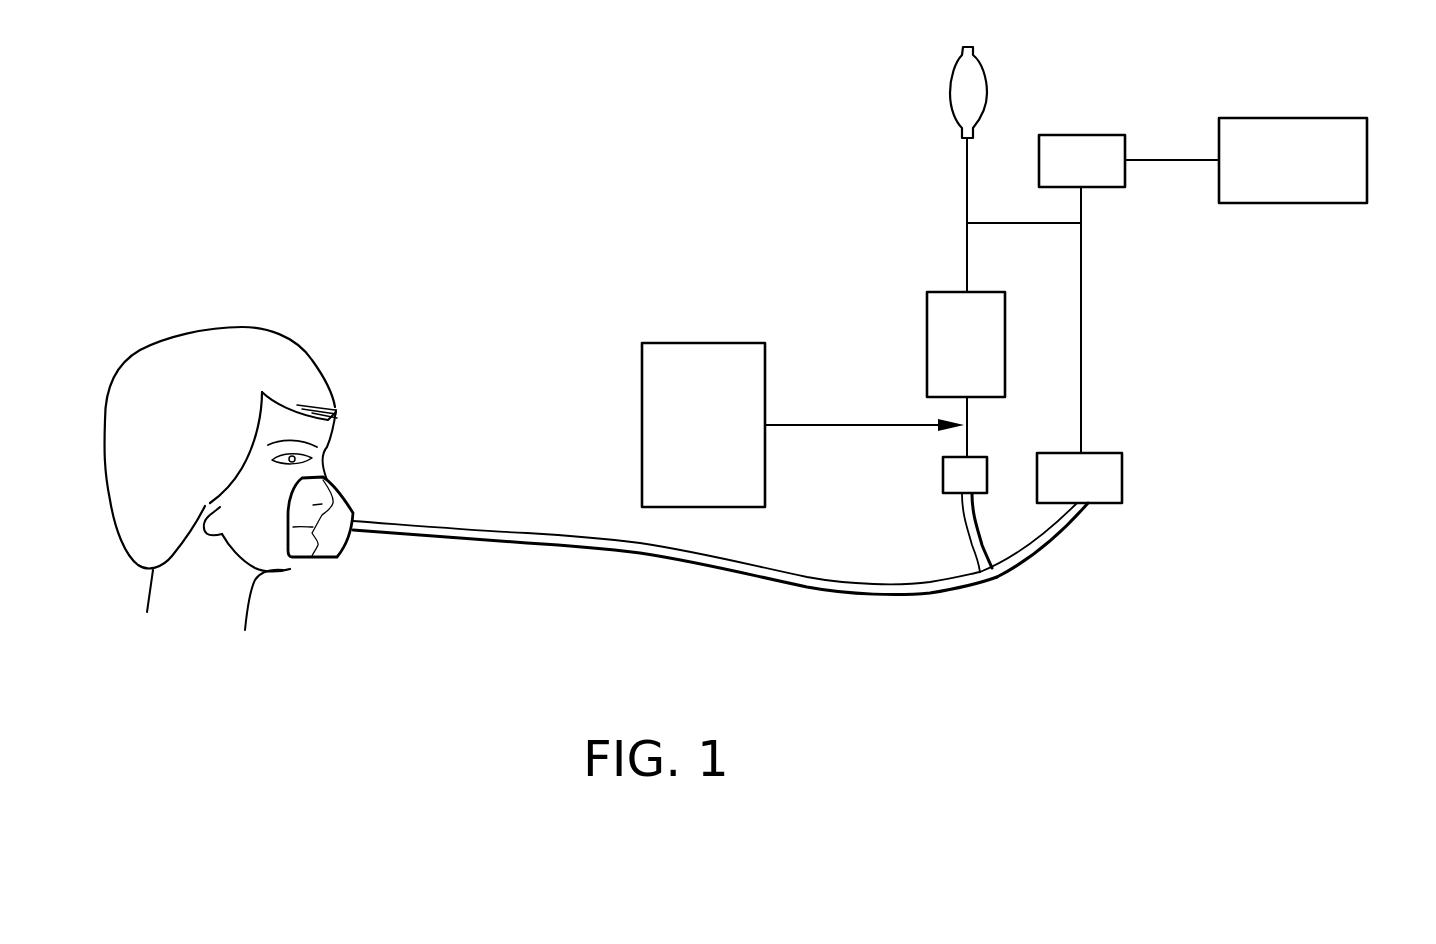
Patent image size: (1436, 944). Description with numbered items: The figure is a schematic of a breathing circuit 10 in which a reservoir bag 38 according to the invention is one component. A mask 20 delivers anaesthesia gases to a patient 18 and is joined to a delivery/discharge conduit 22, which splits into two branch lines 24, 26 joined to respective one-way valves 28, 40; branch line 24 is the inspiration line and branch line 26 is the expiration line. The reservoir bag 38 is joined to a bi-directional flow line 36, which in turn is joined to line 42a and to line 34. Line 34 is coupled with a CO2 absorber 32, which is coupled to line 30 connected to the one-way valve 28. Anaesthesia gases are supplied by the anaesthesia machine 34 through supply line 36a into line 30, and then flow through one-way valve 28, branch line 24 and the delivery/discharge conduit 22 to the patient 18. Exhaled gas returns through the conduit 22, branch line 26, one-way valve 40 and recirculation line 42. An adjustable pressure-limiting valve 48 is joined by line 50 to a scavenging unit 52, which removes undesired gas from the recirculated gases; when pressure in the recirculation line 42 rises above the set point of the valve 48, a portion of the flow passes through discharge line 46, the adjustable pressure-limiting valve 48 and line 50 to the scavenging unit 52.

The breathing circuit 10 is at (1045, 670).
The patient 18 is at (288, 292).
The mask 20 is at (335, 558).
The delivery/discharge conduit 22 is at (600, 548).
The branch line 24 is at (963, 522).
The branch line 26 is at (1060, 543).
The one-way valve 28 is at (945, 472).
The line 30 is at (968, 441).
The CO2 absorber 32 is at (932, 328).
The anaesthesia machine 34 is at (650, 430).
The bi-directional flow line 36 is at (966, 172).
The supply line 36a is at (877, 425).
The reservoir bag 38 is at (977, 73).
The one-way valve 40 is at (1117, 477).
The recirculation line 42 is at (1082, 353).
The line 42a is at (997, 224).
The discharge line 46 is at (1082, 205).
The adjustable pressure-limiting valve 48 is at (1095, 137).
The line 50 is at (1180, 160).
The scavenging unit 52 is at (1358, 155).